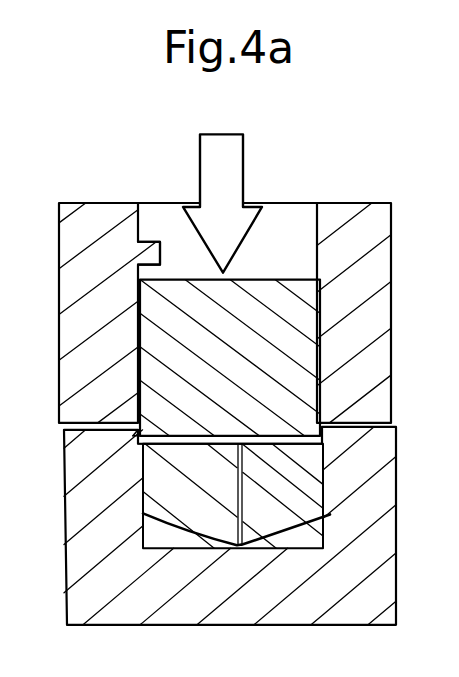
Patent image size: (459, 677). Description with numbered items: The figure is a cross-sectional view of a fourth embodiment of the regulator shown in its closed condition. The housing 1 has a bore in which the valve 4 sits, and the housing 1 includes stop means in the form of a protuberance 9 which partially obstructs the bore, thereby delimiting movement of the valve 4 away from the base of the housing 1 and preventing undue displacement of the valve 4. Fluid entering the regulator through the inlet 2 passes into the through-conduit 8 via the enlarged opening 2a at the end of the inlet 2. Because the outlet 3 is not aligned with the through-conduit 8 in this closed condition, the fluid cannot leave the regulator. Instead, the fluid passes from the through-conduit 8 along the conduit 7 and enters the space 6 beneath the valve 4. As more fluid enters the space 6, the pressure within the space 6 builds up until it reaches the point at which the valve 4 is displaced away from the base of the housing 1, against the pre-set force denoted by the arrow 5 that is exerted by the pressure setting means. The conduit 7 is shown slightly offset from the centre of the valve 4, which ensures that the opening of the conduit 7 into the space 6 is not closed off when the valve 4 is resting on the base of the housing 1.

The housing 1 is at (382, 357).
The inlet 2 is at (60, 413).
The enlarged opening 2a is at (137, 438).
The outlet 3 is at (360, 428).
The valve 4 is at (277, 332).
The arrow 5 is at (226, 195).
The space 6 is at (300, 541).
The conduit 7 is at (233, 492).
The through-conduit 8 is at (262, 435).
The protuberance 9 is at (140, 252).